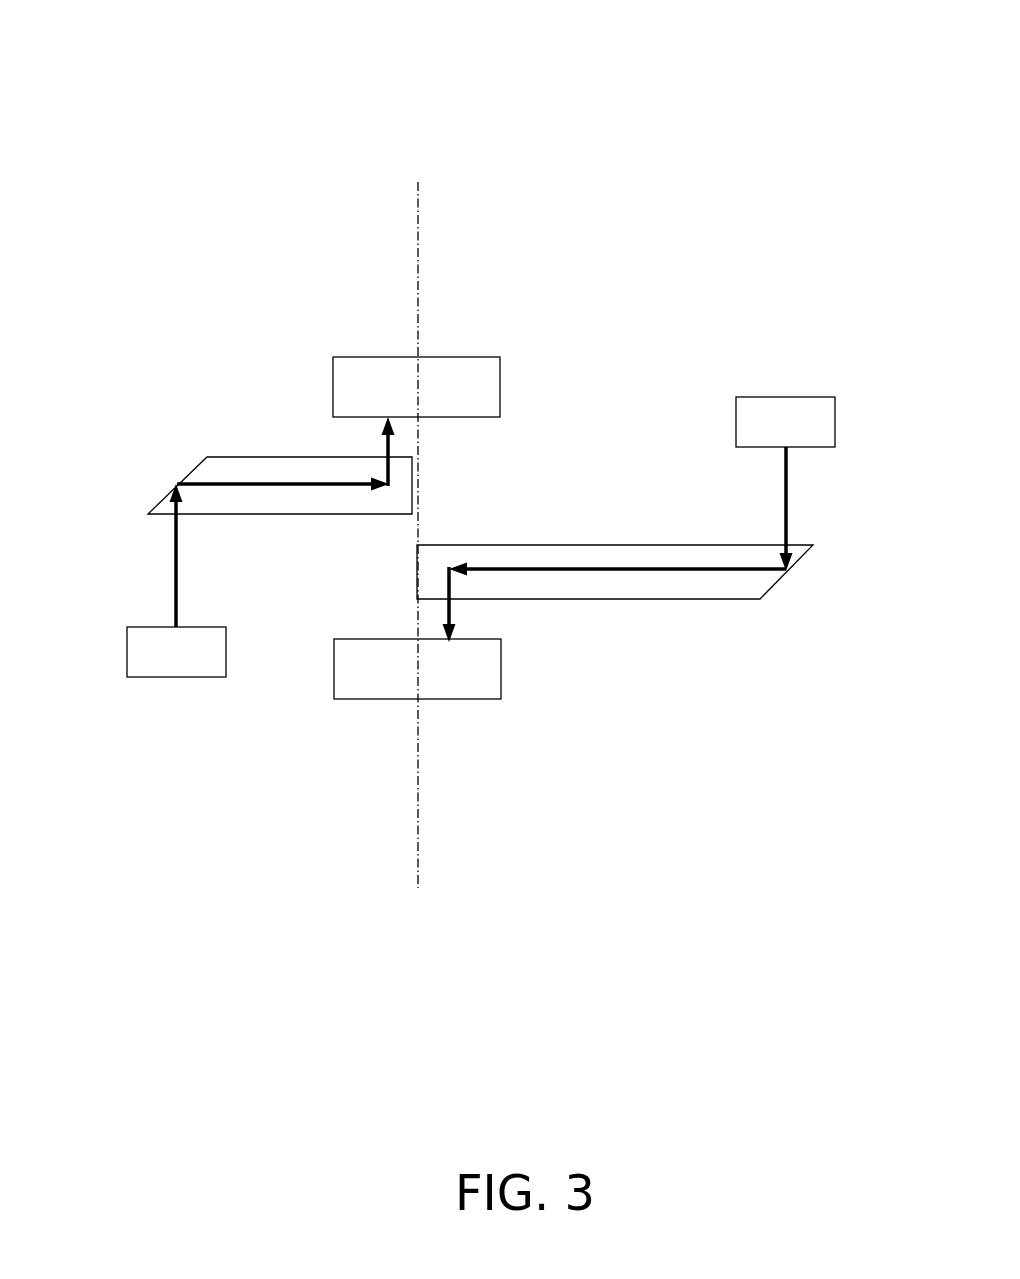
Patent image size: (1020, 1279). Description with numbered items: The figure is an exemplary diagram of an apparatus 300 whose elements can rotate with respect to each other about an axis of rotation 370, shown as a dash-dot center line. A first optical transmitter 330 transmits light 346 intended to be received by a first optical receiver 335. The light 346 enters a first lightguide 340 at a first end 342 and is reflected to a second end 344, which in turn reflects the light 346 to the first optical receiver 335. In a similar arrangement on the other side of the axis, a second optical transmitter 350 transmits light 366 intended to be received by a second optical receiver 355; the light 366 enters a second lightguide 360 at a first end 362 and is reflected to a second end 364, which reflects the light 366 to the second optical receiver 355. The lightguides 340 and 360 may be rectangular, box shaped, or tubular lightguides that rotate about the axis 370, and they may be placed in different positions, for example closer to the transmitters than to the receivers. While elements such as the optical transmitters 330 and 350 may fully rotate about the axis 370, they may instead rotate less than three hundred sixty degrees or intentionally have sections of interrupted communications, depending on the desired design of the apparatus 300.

The apparatus 300 is at (818, 48).
The first optical transmitter 330 is at (835, 407).
The first optical receiver 335 is at (478, 700).
The first lightguide 340 is at (608, 600).
The first end 342 is at (805, 556).
The second end 344 is at (465, 545).
The light 346 is at (788, 497).
The second optical transmitter 350 is at (127, 647).
The second optical receiver 355 is at (475, 357).
The second lightguide 360 is at (283, 517).
The first end 362 is at (153, 508).
The second end 364 is at (360, 514).
The light 366 is at (173, 585).
The axis of rotation 370 is at (418, 860).